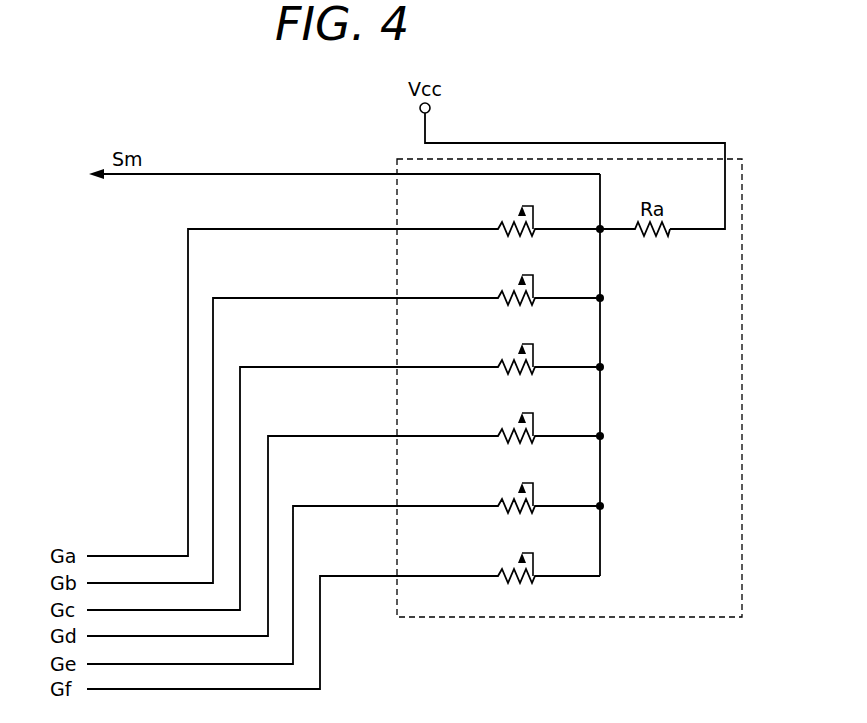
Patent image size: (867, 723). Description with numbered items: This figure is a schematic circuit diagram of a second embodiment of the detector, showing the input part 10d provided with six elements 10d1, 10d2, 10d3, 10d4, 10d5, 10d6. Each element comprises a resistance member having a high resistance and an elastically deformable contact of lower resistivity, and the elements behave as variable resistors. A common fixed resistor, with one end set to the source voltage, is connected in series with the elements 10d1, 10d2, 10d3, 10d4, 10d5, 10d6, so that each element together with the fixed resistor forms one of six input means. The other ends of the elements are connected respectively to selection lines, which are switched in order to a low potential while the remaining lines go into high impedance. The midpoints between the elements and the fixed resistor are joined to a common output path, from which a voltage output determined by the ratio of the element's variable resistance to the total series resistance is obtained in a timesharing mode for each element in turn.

The input part 10d is at (742, 195).
The element 10d1 is at (458, 214).
The element 10d2 is at (458, 283).
The element 10d3 is at (458, 352).
The element 10d4 is at (458, 421).
The element 10d5 is at (458, 491).
The element 10d6 is at (458, 561).